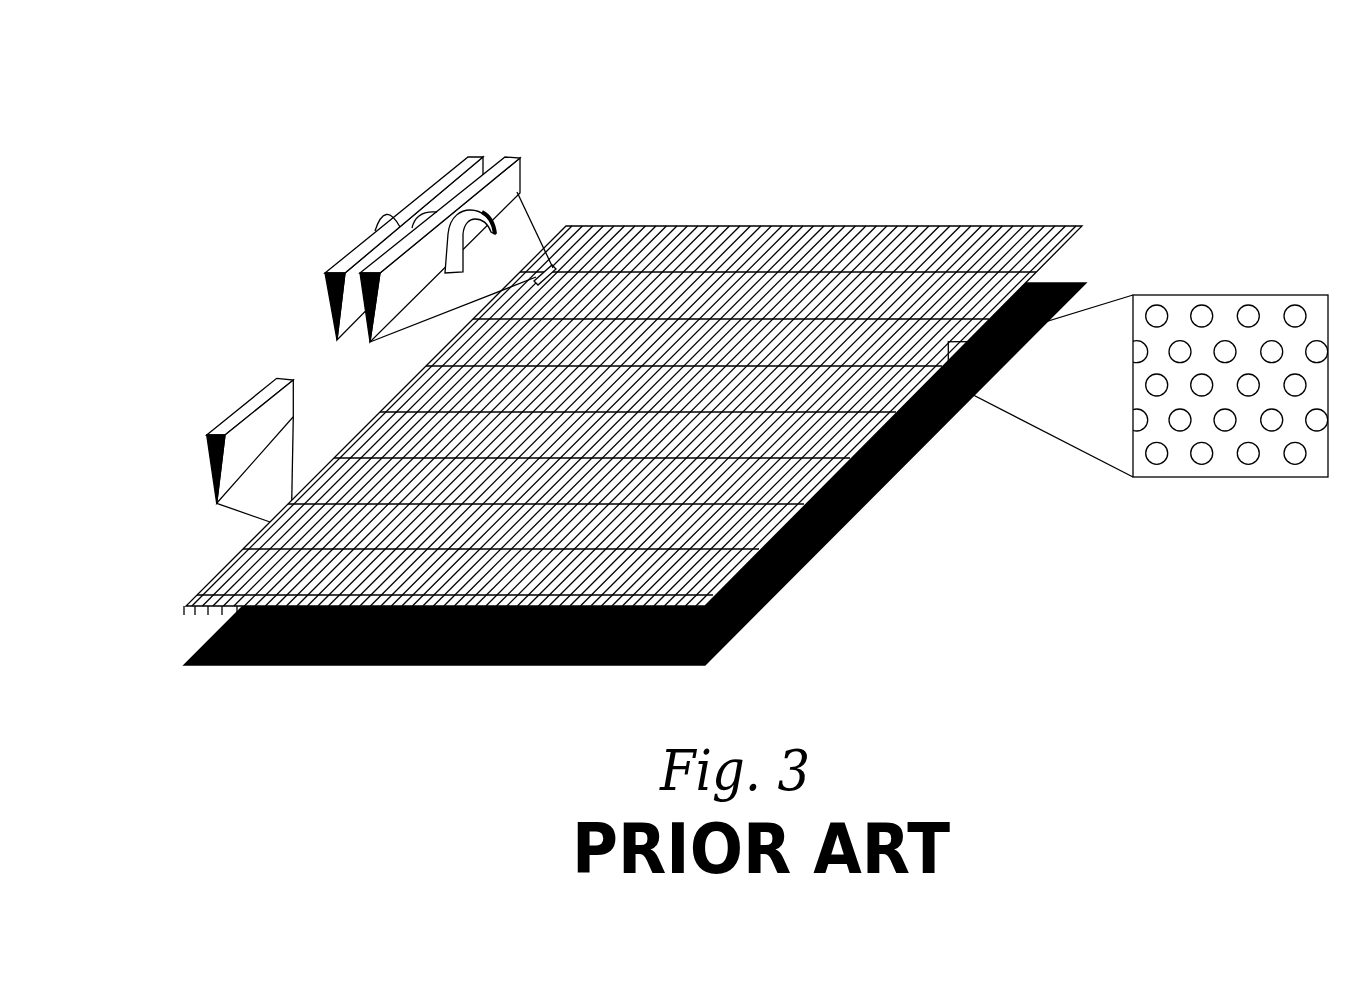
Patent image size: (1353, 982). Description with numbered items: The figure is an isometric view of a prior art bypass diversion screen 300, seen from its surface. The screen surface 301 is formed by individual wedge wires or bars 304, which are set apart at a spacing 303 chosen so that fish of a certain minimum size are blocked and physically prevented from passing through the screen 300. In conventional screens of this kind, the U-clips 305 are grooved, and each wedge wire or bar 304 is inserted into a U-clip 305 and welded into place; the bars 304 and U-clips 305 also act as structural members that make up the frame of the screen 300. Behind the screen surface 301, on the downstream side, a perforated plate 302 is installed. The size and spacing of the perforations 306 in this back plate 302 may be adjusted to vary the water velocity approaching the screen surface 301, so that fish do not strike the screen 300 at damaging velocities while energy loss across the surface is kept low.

The diversion screen 300 is at (745, 366).
The screen surface 301 is at (797, 263).
The perforated plate 302 is at (1138, 417).
The spacing 303 is at (450, 170).
The wedge wire or bar 304 is at (245, 400).
The U-clip 305 is at (495, 226).
The perforations 306 is at (1273, 431).